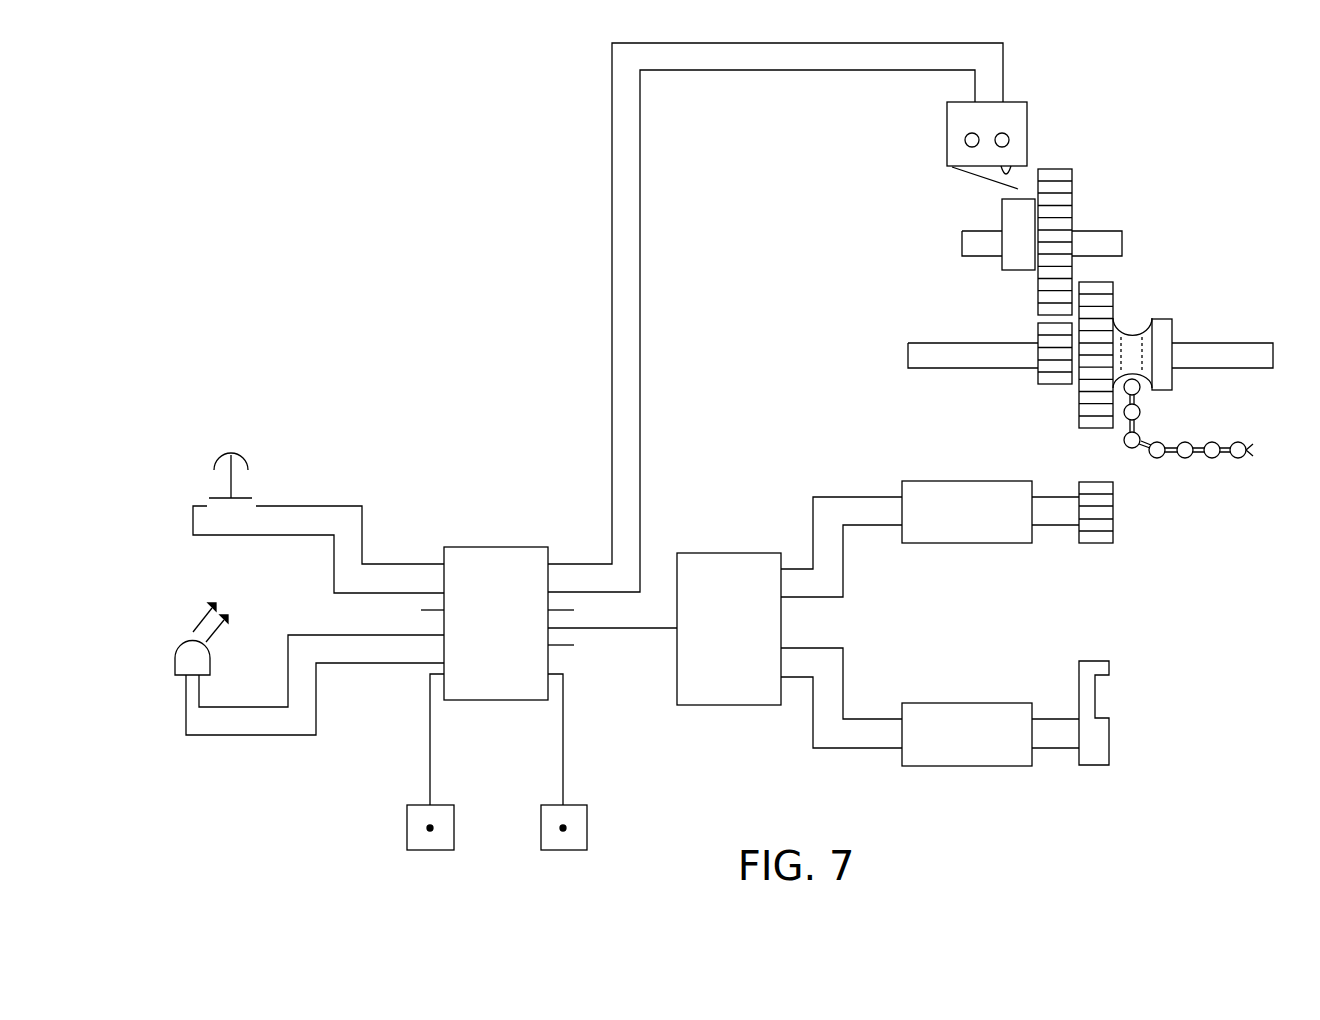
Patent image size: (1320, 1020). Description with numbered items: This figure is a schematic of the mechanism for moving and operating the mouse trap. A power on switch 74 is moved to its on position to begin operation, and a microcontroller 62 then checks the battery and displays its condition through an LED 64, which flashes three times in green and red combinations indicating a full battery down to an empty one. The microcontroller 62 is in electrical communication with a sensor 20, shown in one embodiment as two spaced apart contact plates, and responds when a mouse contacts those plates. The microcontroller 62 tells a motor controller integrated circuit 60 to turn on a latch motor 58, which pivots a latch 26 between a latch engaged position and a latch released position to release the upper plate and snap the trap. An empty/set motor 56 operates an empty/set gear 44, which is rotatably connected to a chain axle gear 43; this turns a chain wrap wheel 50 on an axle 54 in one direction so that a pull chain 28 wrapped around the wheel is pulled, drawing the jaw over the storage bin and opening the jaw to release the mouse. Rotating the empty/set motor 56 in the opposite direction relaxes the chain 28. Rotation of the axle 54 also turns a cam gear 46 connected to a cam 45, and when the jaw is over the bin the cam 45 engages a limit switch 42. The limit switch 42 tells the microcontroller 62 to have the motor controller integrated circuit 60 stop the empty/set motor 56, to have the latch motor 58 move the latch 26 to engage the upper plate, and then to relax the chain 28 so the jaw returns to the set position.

The sensor 20 is at (577, 813).
The latch 26 is at (1103, 742).
The pull chain 28 is at (1238, 456).
The limit switch 42 is at (1018, 123).
The chain axle gear 43 is at (1105, 300).
The empty/set gear 44 is at (1103, 536).
The cam 45 is at (1014, 220).
The cam gear 46 is at (1063, 187).
The chain wrap wheel 50 is at (1133, 357).
The axle 54 is at (945, 352).
The empty/set motor 56 is at (978, 525).
The latch motor 58 is at (987, 722).
The motor controller integrated circuit 60 is at (735, 695).
The microcontroller 62 is at (495, 683).
The LED 64 is at (185, 657).
The power on switch 74 is at (215, 463).